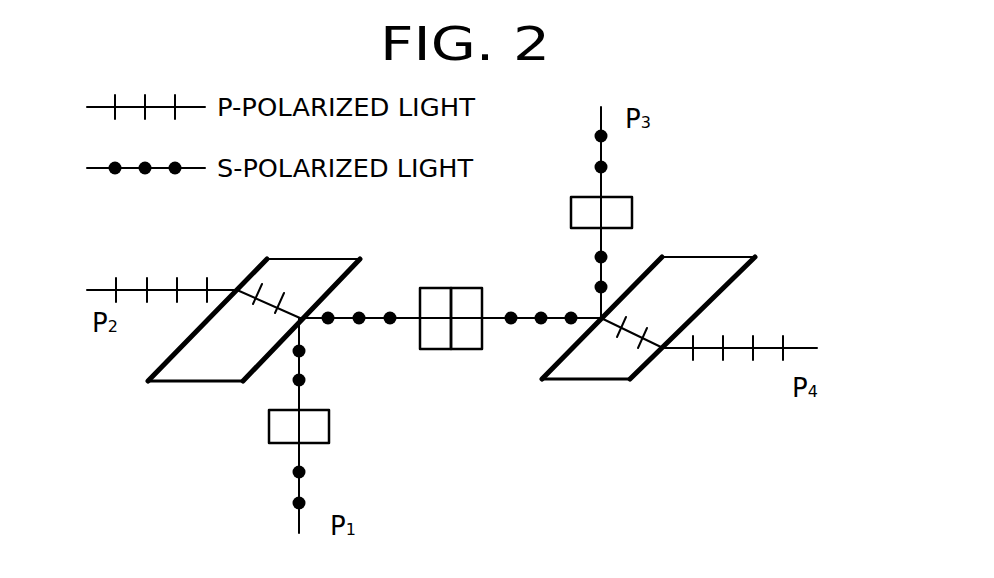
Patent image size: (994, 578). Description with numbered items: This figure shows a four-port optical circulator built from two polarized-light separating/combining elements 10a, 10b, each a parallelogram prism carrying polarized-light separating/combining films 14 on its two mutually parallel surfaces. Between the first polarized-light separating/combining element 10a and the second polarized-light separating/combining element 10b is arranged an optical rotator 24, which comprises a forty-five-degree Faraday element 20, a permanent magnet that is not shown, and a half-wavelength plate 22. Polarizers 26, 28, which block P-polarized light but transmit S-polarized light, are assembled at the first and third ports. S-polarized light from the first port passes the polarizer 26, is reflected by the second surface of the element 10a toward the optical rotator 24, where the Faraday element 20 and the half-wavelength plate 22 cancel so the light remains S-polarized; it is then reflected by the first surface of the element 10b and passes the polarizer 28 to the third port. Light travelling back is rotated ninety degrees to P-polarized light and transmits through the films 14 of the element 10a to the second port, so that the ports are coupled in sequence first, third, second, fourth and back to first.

The first polarized-light separating/combining element 10a is at (336, 247).
The second polarized-light separating/combining element 10b is at (733, 251).
The polarized-light separating/combining film 14 is at (155, 372).
The 45-degree Faraday element 20 is at (435, 343).
The ½-wavelength plate 22 is at (468, 343).
The optical rotator 24 is at (444, 312).
The polarizer 26 is at (277, 428).
The polarizer 28 is at (578, 207).